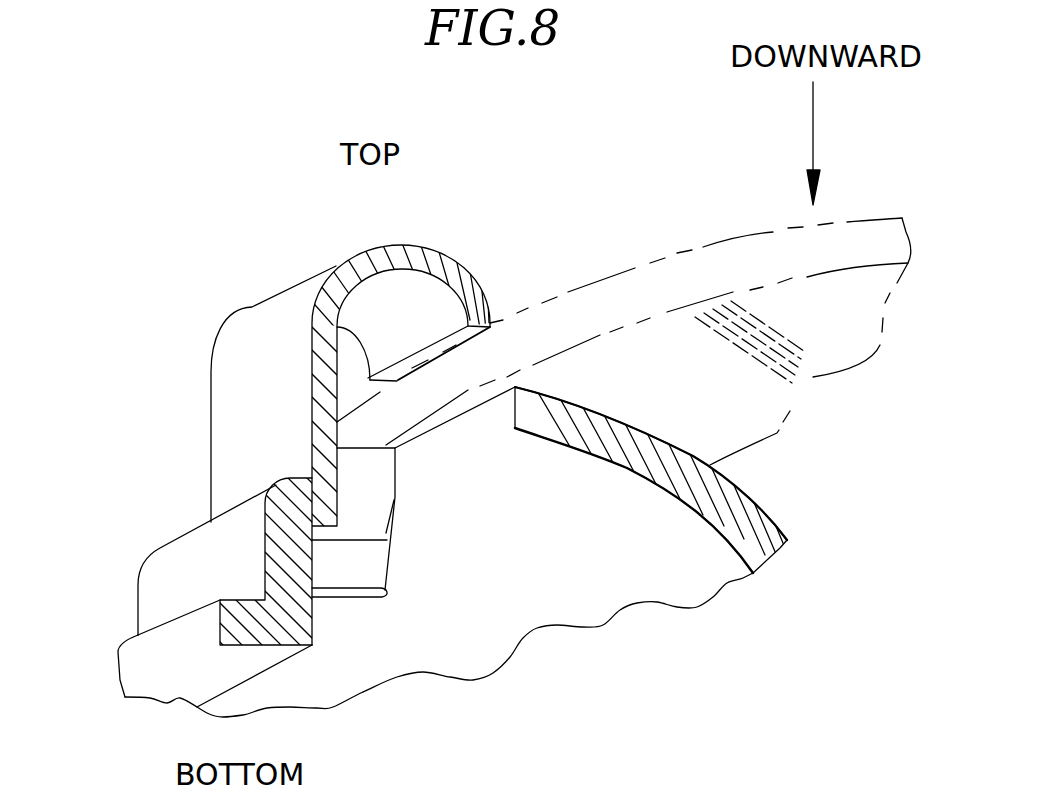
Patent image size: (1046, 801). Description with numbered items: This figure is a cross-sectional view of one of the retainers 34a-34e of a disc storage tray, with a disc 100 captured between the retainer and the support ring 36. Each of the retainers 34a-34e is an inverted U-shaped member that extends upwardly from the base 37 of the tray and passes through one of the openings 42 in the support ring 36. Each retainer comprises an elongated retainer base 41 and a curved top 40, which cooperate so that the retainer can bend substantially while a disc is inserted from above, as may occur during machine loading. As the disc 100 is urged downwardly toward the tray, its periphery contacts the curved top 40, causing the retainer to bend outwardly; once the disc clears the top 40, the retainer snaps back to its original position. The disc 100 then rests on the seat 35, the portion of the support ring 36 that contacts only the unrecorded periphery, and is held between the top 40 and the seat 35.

The retainers 34a-34e is at (455, 215).
The seat 35 is at (560, 395).
The support ring 36 is at (752, 498).
The base 37 is at (147, 660).
The curved top 40 is at (305, 283).
The retainer base 41 is at (242, 407).
The openings 42 is at (465, 442).
The disc 100 is at (806, 387).